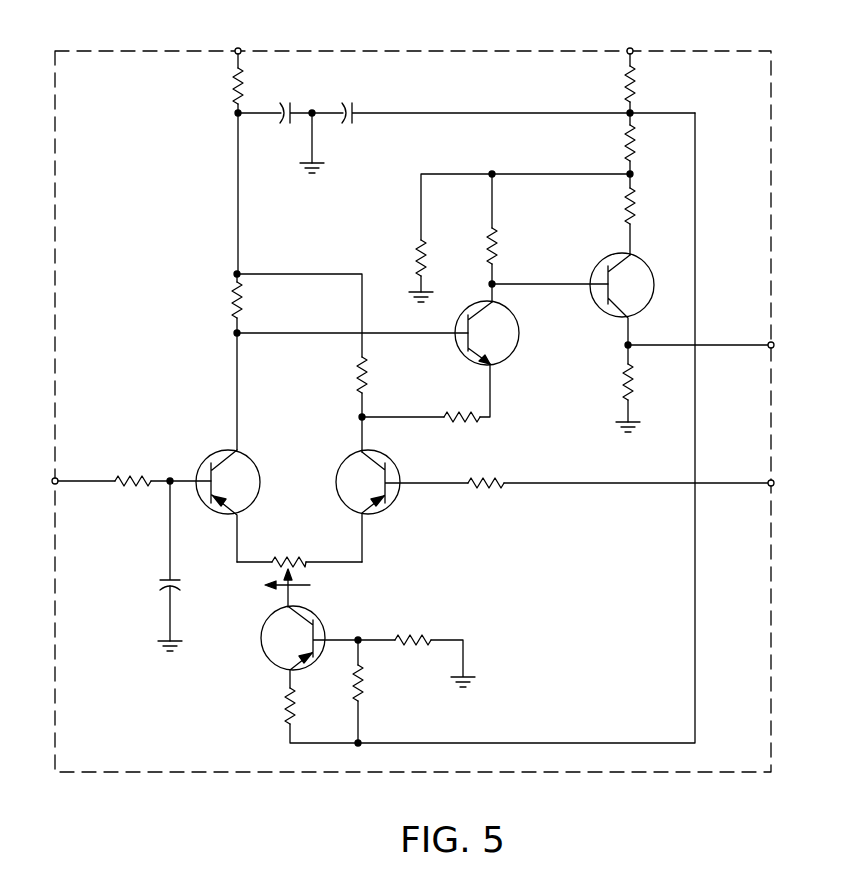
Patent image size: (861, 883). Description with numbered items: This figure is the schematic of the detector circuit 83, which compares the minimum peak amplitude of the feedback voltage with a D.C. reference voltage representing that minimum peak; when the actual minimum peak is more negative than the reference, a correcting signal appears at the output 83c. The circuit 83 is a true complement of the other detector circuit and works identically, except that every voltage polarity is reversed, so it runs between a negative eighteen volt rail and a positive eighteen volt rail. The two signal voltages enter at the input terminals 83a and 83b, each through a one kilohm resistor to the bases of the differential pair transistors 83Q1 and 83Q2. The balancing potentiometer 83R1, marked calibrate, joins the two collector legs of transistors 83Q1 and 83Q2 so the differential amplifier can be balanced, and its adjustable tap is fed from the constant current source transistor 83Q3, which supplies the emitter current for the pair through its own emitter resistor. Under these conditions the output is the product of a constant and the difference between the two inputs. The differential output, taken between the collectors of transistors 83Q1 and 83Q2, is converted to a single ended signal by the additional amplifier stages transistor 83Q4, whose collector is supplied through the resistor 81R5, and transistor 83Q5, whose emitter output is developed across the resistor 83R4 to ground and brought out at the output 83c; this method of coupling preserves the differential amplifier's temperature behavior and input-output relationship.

The detector circuit 83 is at (280, 776).
The input terminal 83a is at (52, 485).
The input terminal 83b is at (770, 487).
The output 83c is at (773, 345).
The transistor 83Q1 is at (218, 511).
The transistor 83Q2 is at (386, 512).
The transistor 83Q3 is at (262, 660).
The transistor 83Q4 is at (512, 352).
The transistor 83Q5 is at (616, 264).
The balancing potentiometer 83R1 is at (286, 556).
The resistor 83R4 is at (634, 372).
The resistor 81R5 is at (497, 245).